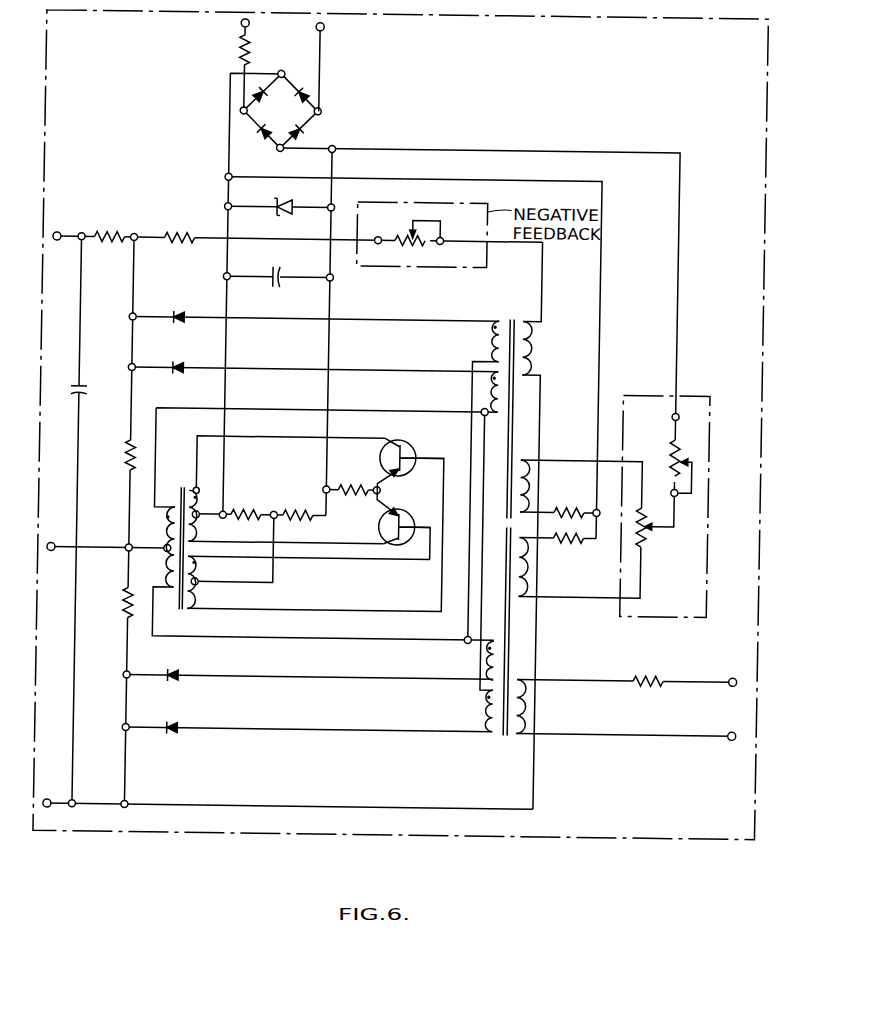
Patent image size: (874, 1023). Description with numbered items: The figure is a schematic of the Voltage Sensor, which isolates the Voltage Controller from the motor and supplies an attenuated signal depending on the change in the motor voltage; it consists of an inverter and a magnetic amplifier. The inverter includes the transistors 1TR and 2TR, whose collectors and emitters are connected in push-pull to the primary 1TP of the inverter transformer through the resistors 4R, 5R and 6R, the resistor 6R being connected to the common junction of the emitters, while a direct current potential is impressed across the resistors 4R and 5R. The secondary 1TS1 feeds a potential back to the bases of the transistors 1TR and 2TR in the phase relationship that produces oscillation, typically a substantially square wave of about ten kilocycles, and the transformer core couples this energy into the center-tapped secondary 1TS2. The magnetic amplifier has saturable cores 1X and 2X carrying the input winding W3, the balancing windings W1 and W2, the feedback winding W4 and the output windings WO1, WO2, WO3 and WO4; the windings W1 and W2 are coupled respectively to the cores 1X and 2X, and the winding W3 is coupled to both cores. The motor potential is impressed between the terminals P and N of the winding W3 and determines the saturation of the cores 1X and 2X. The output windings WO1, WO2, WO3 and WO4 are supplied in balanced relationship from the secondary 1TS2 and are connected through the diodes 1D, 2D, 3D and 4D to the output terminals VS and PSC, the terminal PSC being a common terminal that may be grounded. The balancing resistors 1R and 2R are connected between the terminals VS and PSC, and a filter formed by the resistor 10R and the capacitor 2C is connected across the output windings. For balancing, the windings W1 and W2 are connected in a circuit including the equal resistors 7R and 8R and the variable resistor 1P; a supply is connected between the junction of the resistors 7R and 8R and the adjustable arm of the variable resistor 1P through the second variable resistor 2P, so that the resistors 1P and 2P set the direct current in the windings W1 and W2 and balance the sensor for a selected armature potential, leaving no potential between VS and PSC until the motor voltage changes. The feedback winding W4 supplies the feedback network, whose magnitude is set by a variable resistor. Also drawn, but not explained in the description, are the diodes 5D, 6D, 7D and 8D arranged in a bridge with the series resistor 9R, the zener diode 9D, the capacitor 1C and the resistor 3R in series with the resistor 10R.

The resistor 9R is at (236, 42).
The bridge diode 7D is at (293, 88).
The bridge diode 5D is at (269, 98).
The bridge diode 6D is at (259, 138).
The bridge diode 8D is at (303, 133).
The zener diode 9D is at (276, 202).
The capacitor 1C is at (277, 272).
The output terminal VS is at (54, 235).
The filter resistor 10R is at (112, 232).
The resistor 3R is at (180, 231).
The diode 2D is at (175, 316).
The diode 1D is at (174, 369).
The filter capacitor 2C is at (87, 398).
The balancing resistor 1R is at (125, 463).
The balancing resistor 2R is at (125, 608).
The center-tapped secondary 1TS2 is at (167, 538).
The primary 1TP is at (200, 529).
The secondary 1TS1 is at (199, 598).
The resistor 4R is at (240, 516).
The resistor 5R is at (294, 515).
The resistor 6R is at (344, 490).
The transistor 1TR is at (412, 449).
The transistor 2TR is at (396, 509).
The diode 3D is at (173, 675).
The diode 4D is at (174, 728).
The common terminal PSC is at (54, 812).
The saturable core 1X is at (513, 393).
The saturable core 2X is at (513, 640).
The output winding WO1 is at (492, 345).
The output winding WO2 is at (490, 396).
The output winding WO3 is at (490, 660).
The output winding WO4 is at (490, 711).
The balancing winding W1 is at (527, 458).
The balancing winding W2 is at (531, 578).
The input winding W3 is at (523, 735).
The feedback winding W4 is at (531, 343).
The resistor 7R is at (566, 508).
The resistor 8R is at (568, 543).
The second variable resistor 2P is at (671, 444).
The variable resistor 1P is at (655, 540).
The terminal P is at (734, 673).
The terminal N is at (737, 737).